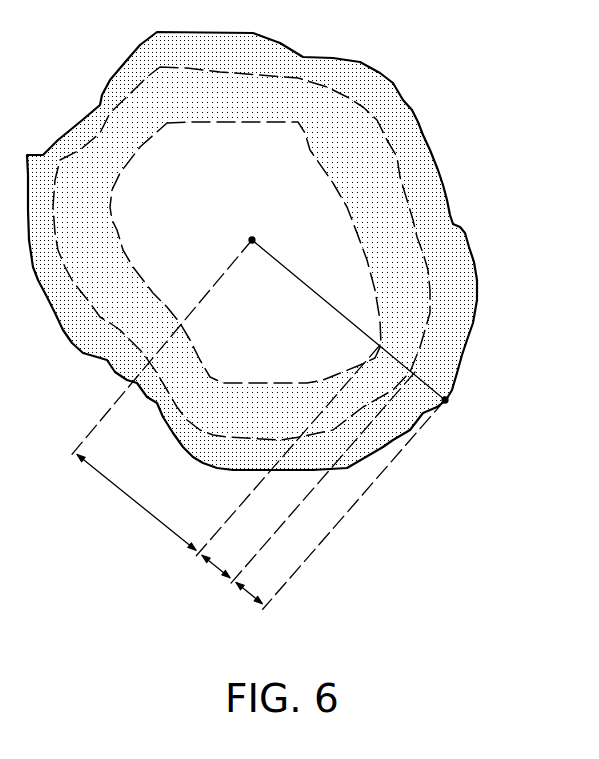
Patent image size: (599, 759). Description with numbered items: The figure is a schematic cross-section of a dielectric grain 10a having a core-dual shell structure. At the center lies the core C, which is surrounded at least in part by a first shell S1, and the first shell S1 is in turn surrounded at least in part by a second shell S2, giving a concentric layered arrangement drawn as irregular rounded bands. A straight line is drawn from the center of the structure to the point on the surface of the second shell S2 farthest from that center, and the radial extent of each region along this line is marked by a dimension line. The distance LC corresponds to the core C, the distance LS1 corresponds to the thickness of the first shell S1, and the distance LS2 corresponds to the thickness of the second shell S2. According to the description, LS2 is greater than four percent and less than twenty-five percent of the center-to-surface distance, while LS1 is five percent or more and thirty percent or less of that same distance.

The dielectric grain 10a is at (533, 134).
The core C is at (311, 163).
The first shell S1 is at (373, 193).
The second shell S2 is at (453, 225).
The distance corresponding to the core LC is at (136, 496).
The distance corresponding to the thickness of the first shell LS1 is at (218, 564).
The distance corresponding to the thickness of the second shell LS2 is at (256, 597).